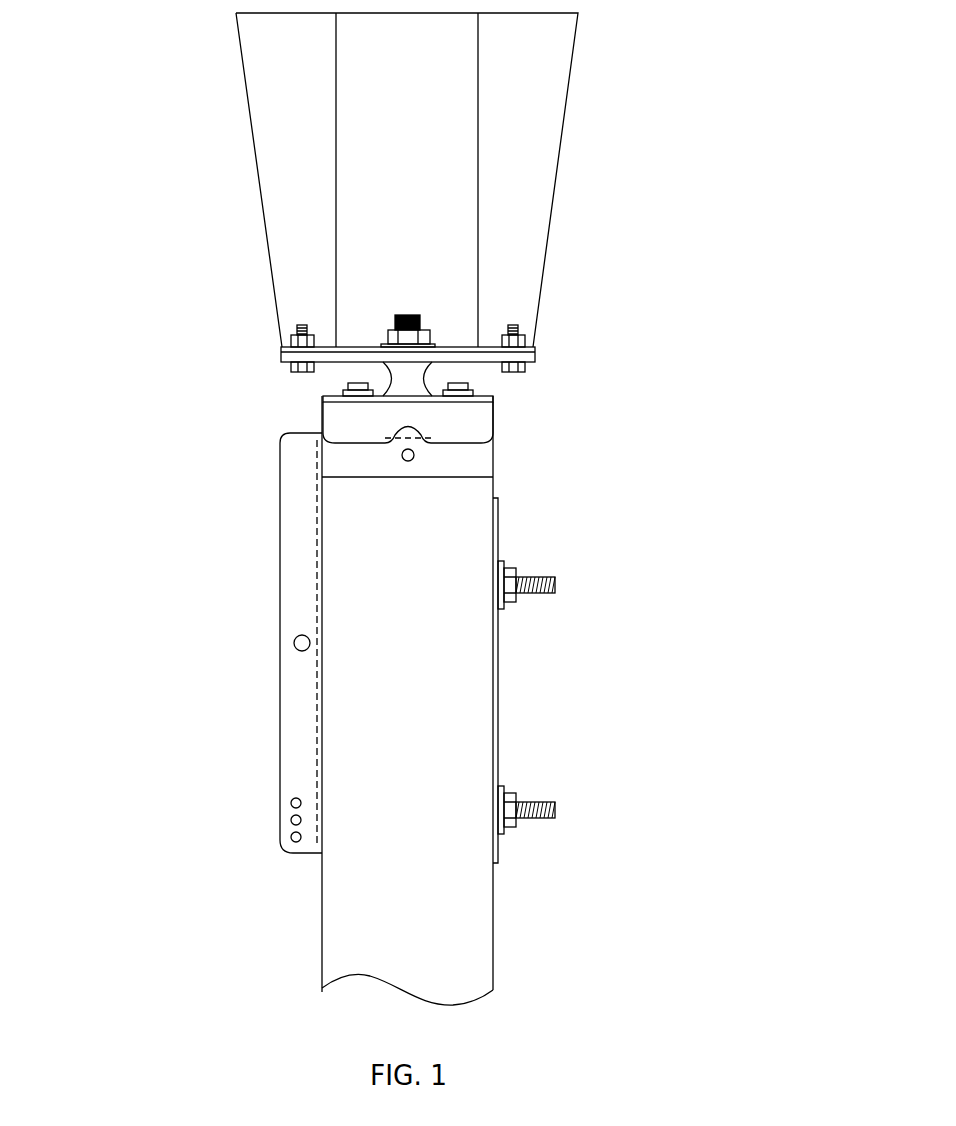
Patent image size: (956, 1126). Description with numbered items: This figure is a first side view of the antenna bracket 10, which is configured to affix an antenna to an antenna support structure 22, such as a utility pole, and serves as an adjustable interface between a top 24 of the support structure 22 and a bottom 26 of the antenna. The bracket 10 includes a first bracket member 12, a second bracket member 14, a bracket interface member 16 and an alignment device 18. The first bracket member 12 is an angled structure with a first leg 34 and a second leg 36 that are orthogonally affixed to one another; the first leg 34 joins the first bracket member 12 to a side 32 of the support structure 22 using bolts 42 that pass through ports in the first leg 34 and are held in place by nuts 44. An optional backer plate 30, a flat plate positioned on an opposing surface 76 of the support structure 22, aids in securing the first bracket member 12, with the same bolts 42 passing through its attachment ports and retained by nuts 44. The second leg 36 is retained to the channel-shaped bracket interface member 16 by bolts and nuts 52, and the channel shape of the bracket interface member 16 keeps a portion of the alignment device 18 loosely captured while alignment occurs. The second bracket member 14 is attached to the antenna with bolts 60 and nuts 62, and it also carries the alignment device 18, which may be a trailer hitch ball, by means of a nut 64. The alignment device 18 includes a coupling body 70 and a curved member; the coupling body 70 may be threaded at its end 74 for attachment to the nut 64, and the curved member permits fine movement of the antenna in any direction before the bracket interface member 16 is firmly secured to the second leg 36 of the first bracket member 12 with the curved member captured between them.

The antenna bracket 10 is at (116, 228).
The first bracket member 12 is at (242, 424).
The second bracket member 14 is at (281, 358).
The bracket interface member 16 is at (493, 420).
The alignment device 18 is at (410, 385).
The antenna support structure 22 is at (410, 715).
The top of the support structure 24 is at (495, 490).
The bottom of the antenna 26 is at (338, 347).
The backer plate 30 is at (498, 750).
The side of the support structure 32 is at (320, 952).
The first leg 34 is at (298, 575).
The second leg 36 is at (343, 415).
The bolts 42 is at (556, 586).
The nuts 44 is at (516, 570).
The nuts 52 is at (343, 388).
The bolts 60 is at (527, 369).
The nuts 62 is at (526, 338).
The nut 64 is at (388, 333).
The coupling body 70 is at (420, 367).
The end 74 is at (400, 315).
The opposing surface of the support structure 76 is at (495, 933).